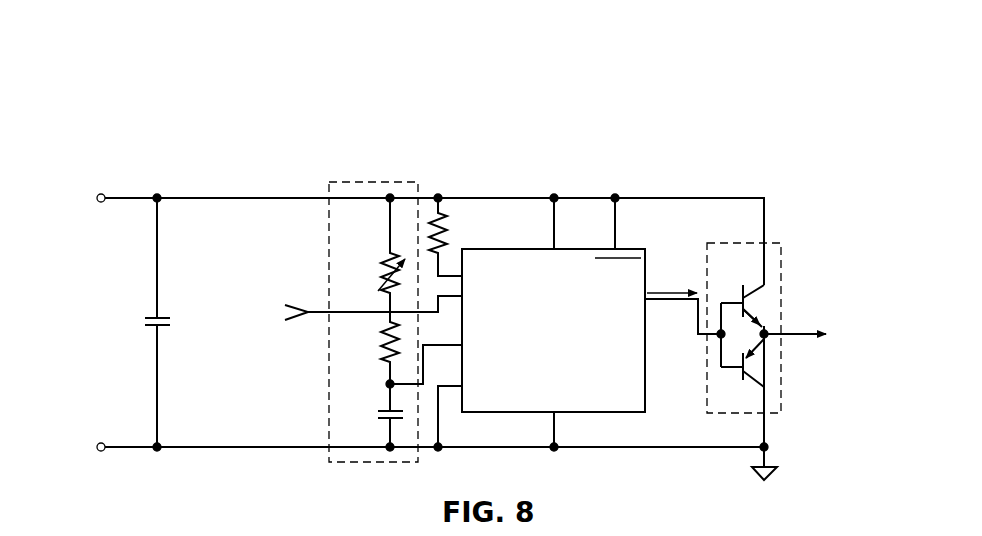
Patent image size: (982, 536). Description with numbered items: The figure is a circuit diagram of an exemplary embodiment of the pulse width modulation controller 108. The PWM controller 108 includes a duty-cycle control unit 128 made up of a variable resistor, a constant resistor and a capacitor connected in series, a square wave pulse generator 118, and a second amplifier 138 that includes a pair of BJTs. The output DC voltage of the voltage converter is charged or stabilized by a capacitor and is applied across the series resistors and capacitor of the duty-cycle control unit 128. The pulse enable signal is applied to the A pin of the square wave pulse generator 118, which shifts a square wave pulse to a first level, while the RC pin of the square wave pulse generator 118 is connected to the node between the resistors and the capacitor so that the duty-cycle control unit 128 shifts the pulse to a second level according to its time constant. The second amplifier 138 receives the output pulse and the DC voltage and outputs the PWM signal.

The pulse width modulation controller 108 is at (475, 254).
The square wave pulse generator 118 is at (575, 341).
The duty-cycle control unit 128 is at (384, 181).
The second amplifier 138 is at (781, 272).